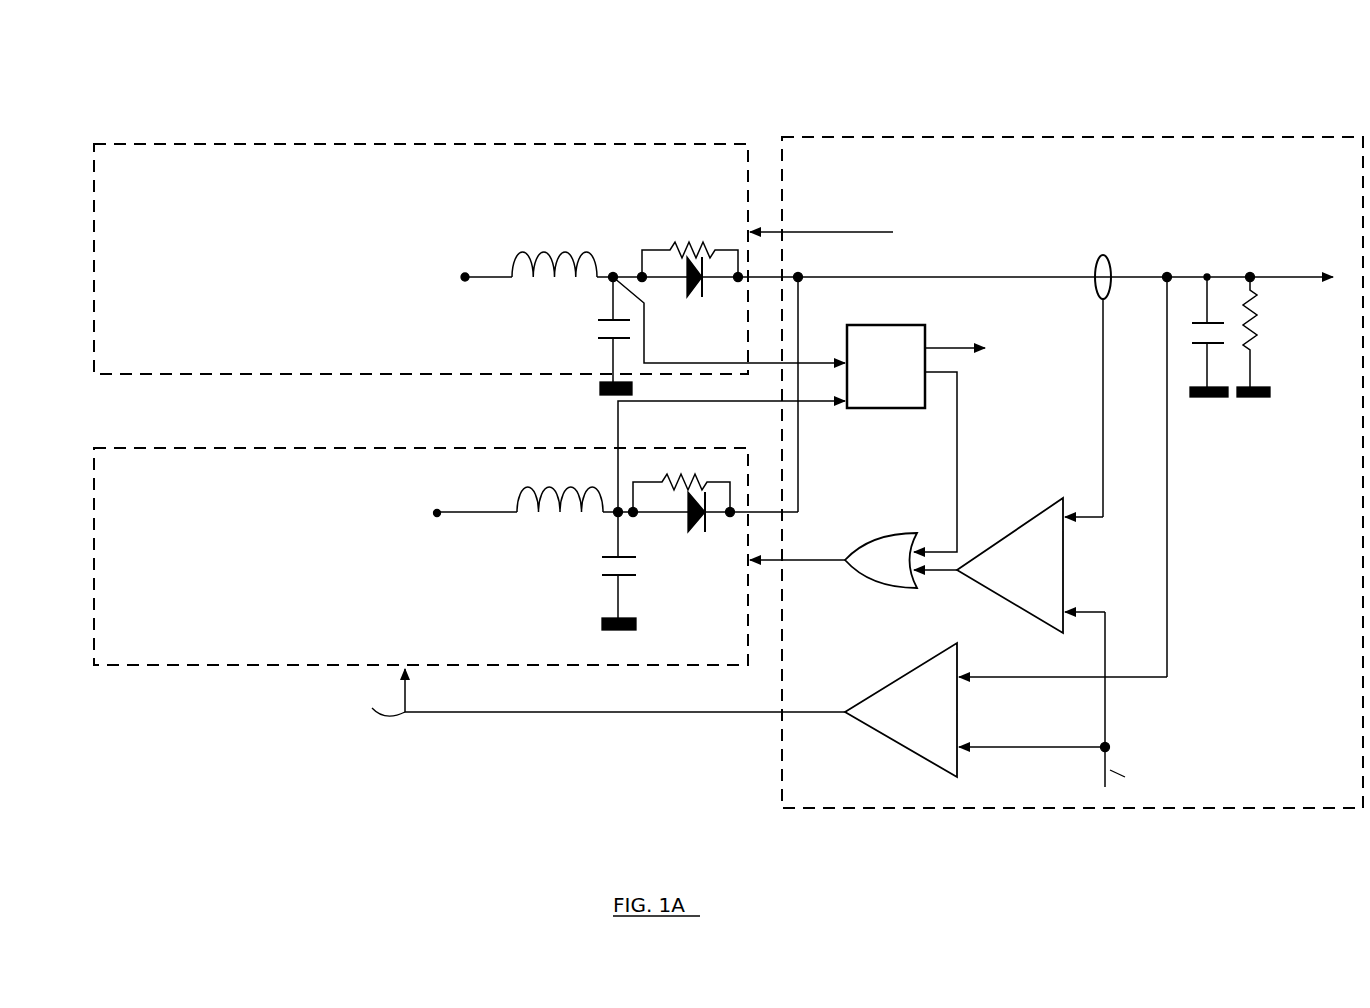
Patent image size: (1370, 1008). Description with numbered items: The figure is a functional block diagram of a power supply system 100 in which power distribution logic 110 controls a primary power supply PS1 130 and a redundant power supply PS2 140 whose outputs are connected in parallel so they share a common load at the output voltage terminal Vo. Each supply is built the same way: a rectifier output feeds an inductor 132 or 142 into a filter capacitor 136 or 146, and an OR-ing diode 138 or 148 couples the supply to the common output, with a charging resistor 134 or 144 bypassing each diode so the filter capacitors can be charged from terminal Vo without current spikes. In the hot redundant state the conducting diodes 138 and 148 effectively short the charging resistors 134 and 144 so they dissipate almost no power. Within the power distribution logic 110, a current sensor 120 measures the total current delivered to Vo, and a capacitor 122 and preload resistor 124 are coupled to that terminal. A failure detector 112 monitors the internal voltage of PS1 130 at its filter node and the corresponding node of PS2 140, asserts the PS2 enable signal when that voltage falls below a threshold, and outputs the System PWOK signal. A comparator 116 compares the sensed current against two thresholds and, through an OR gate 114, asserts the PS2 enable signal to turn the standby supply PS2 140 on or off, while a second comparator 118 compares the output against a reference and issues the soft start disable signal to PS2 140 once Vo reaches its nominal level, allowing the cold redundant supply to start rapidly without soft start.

The power supply system 100 is at (1110, 78).
The power distribution logic 110 is at (960, 135).
The failure detector 112 is at (886, 366).
The OR gate 114 is at (905, 531).
The comparator 116 is at (1044, 516).
The comparator 118 is at (903, 682).
The current sensor 120 is at (1095, 259).
The capacitor 122 is at (1206, 321).
The preload resistor 124 is at (1258, 321).
The power supply PS1 130 is at (469, 269).
The inductor 132 is at (612, 270).
The charging resistor 134 is at (690, 246).
The filter capacitor 136 is at (610, 319).
The diode 138 is at (693, 298).
The power supply PS2 140 is at (469, 533).
The inductor 142 is at (568, 485).
The charging resistor 144 is at (681, 485).
The filter capacitor 146 is at (612, 555).
The diode 148 is at (693, 533).